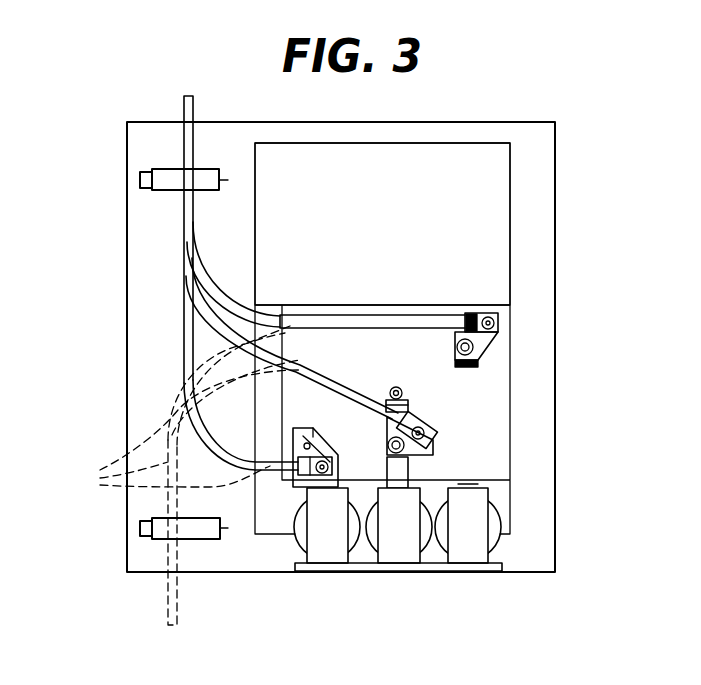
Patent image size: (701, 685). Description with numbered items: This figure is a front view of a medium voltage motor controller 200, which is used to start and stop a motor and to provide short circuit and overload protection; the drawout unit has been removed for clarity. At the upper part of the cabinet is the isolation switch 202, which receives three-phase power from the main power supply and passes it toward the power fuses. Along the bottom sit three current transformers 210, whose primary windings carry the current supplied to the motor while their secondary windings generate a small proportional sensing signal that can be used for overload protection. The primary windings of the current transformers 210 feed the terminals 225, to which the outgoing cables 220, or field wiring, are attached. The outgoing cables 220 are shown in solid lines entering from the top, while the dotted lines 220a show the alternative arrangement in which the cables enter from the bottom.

The motor controller 200 is at (589, 600).
The isolation switch 202 is at (392, 208).
The current transformers 210 is at (355, 567).
The outgoing cables 220 is at (195, 313).
The outgoing cables entering from the bottom 220a is at (175, 475).
The terminals 225 is at (453, 338).